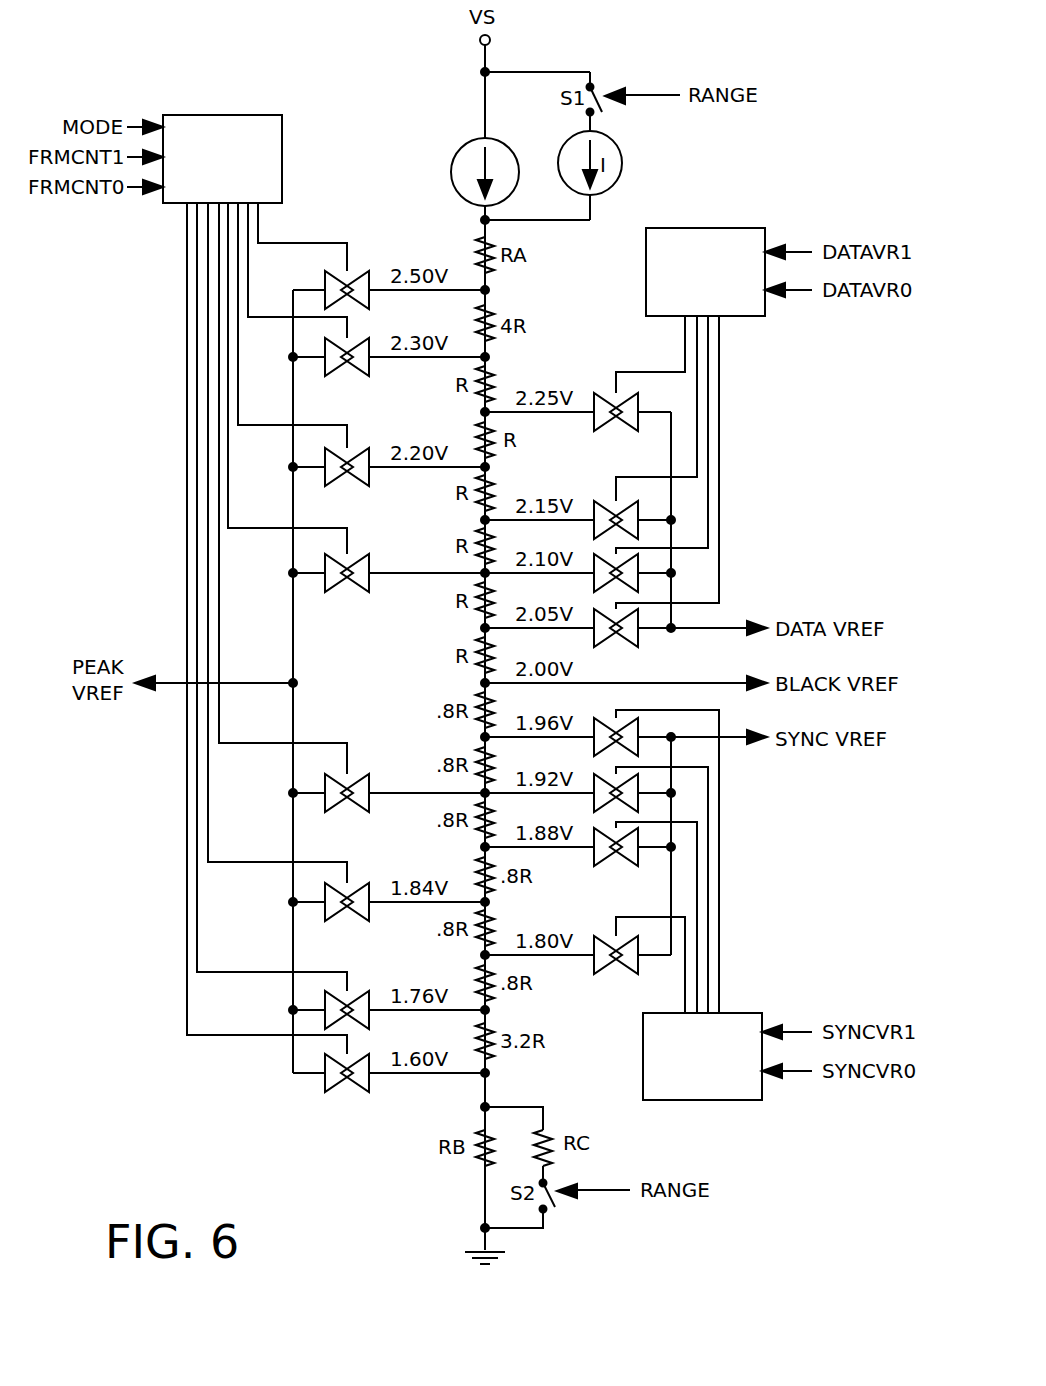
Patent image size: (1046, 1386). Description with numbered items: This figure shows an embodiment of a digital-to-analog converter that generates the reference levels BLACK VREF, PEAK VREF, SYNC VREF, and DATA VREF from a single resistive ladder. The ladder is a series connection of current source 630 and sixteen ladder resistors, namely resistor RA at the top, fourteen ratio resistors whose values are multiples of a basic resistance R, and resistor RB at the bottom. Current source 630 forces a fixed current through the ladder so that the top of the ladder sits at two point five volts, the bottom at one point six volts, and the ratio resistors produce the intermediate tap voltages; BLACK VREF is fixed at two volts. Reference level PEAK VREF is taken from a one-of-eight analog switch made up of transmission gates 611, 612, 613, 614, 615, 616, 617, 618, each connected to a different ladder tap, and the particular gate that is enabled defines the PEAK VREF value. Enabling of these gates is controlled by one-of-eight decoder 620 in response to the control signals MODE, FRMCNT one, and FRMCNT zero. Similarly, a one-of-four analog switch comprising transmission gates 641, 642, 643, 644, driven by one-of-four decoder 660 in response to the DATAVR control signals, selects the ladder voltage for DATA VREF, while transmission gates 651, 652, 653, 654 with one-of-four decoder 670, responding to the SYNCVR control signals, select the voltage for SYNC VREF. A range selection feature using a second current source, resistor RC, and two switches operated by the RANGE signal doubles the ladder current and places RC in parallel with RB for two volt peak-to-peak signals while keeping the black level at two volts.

The transmission gate 611 is at (356, 270).
The transmission gate 612 is at (365, 376).
The transmission gate 613 is at (367, 485).
The transmission gate 614 is at (369, 590).
The transmission gate 615 is at (369, 810).
The transmission gate 616 is at (369, 920).
The transmission gate 617 is at (369, 1022).
The transmission gate 618 is at (369, 1090).
The 1-of-8 decoder 620 is at (210, 115).
The current source 630 is at (455, 150).
The transmission gate 641 is at (598, 396).
The transmission gate 642 is at (598, 505).
The transmission gate 643 is at (594, 582).
The transmission gate 644 is at (634, 645).
The transmission gate 651 is at (594, 745).
The transmission gate 652 is at (594, 802).
The transmission gate 653 is at (624, 863).
The transmission gate 654 is at (608, 972).
The 1-of-4 decoder 660 is at (700, 228).
The 1-of-4 decoder 670 is at (700, 1100).